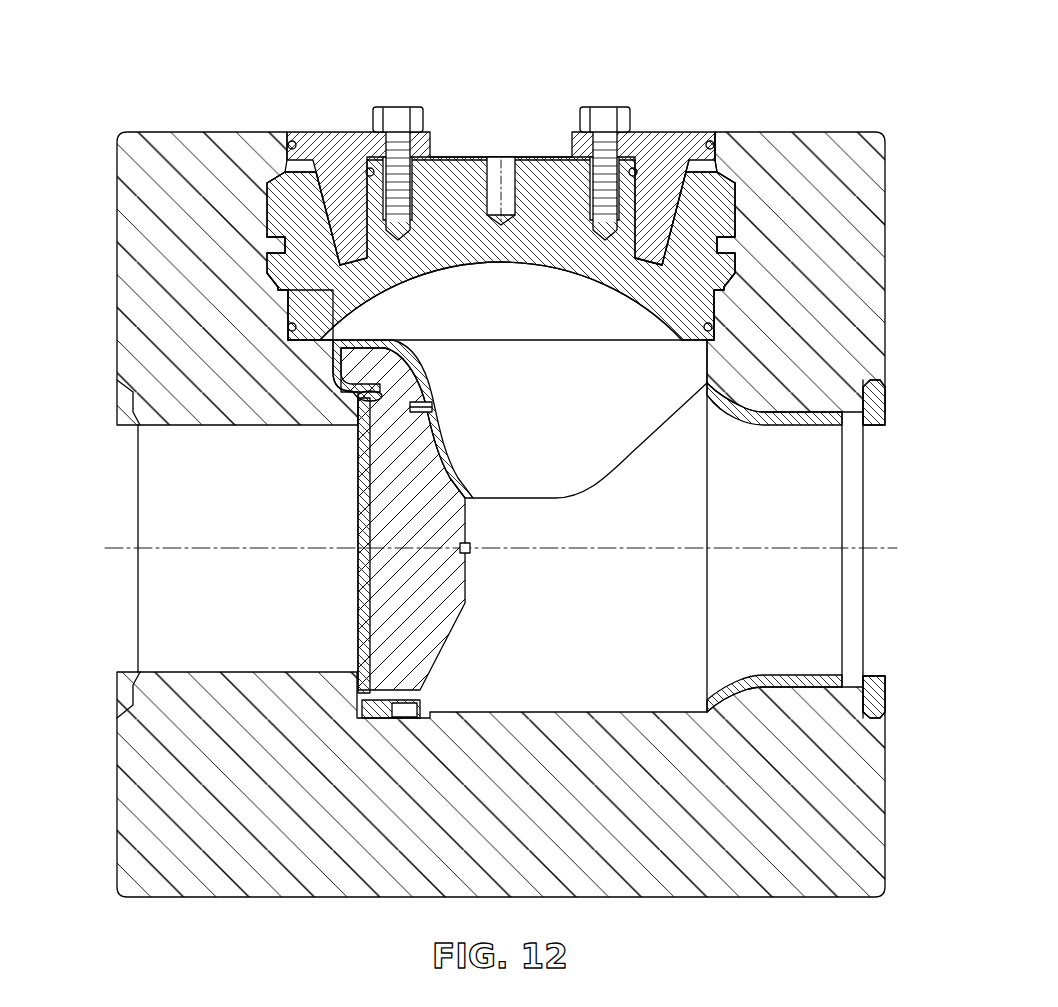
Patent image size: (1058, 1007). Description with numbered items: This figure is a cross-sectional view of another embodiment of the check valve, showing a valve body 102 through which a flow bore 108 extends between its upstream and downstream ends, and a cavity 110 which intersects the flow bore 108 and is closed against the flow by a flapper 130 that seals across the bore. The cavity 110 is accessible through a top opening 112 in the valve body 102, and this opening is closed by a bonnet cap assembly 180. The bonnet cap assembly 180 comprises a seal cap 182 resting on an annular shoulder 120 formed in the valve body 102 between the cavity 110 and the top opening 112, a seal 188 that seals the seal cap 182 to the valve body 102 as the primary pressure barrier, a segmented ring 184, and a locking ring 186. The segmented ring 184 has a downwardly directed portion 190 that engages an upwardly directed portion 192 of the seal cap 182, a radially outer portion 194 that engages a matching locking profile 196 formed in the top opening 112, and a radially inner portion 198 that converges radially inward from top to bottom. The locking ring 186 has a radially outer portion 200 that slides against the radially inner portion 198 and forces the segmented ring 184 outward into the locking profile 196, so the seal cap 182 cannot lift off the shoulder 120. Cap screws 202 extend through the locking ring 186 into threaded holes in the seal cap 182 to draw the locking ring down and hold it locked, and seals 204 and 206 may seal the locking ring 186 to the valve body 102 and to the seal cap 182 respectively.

The valve body 102 is at (886, 178).
The flow bore 108 is at (246, 604).
The cavity 110 is at (550, 712).
The top opening 112 is at (698, 130).
The annular shoulder 120 is at (323, 338).
The flapper 130 is at (378, 495).
The bonnet cap assembly 180 is at (298, 84).
The seal cap 182 is at (447, 171).
The segmented ring 184 is at (727, 171).
The locking ring 186 is at (333, 131).
The seal 188 is at (288, 327).
The downwardly directed portion 190 is at (704, 328).
The upwardly directed portion 192 is at (682, 295).
The radially outer portion 194 is at (725, 215).
The locking profile 196 is at (727, 278).
The radially inner portion 198 is at (340, 245).
The radially outer portion 200 is at (322, 198).
The cap screws 202 is at (396, 103).
The seal 204 is at (287, 143).
The seal 206 is at (635, 168).